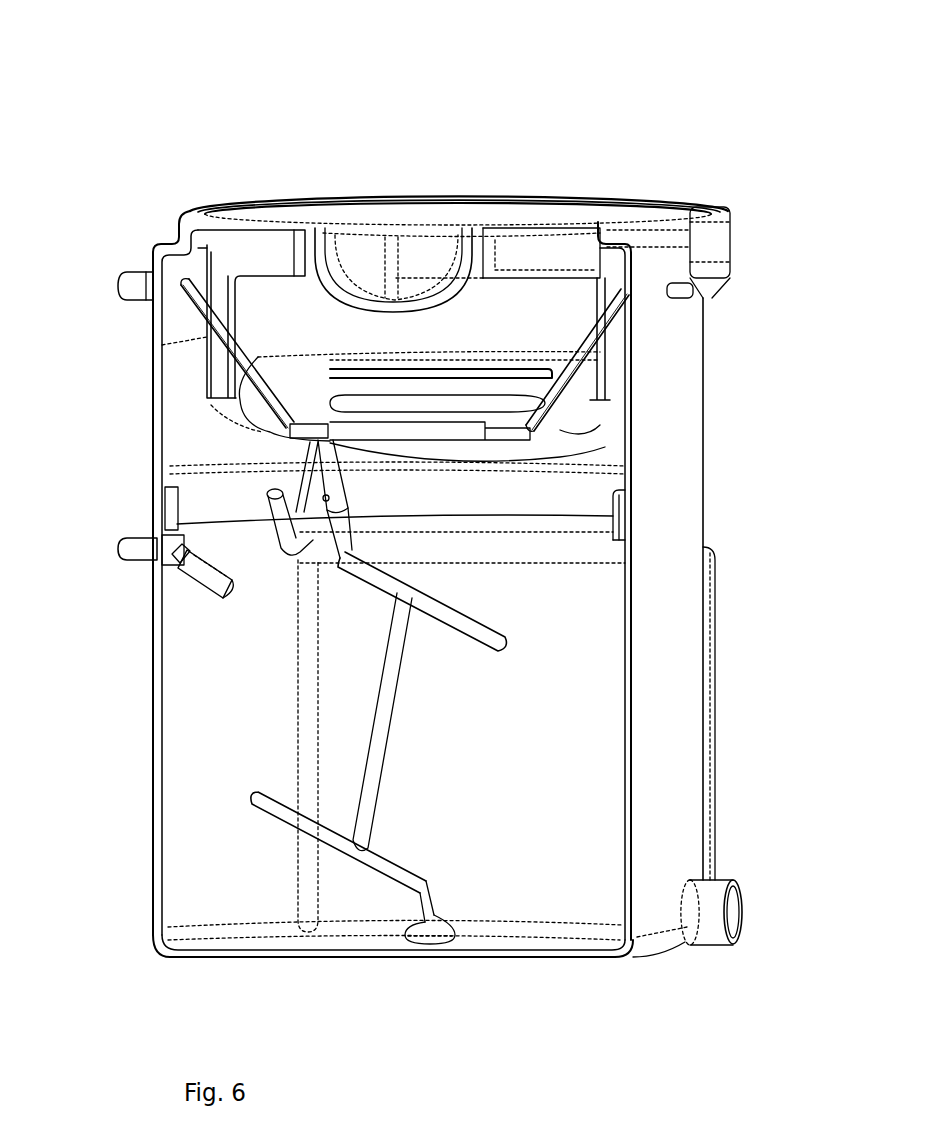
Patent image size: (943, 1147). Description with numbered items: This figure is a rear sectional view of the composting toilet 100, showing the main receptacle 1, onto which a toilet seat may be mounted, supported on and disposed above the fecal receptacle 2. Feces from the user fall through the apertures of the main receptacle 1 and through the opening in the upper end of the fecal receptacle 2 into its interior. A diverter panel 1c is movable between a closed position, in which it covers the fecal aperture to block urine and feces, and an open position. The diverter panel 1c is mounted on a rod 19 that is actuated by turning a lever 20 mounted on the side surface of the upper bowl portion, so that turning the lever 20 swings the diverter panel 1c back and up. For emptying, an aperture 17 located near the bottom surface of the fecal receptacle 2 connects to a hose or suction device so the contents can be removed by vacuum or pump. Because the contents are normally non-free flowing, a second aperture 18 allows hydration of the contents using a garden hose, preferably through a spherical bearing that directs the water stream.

The composting toilet 100 is at (221, 56).
The main receptacle 1 is at (668, 400).
The diverter panel 1c is at (318, 437).
The fecal receptacle 2 is at (660, 603).
The aperture 17 is at (733, 905).
The second aperture 18 is at (200, 592).
The rod 19 is at (206, 332).
The lever 20 is at (110, 274).